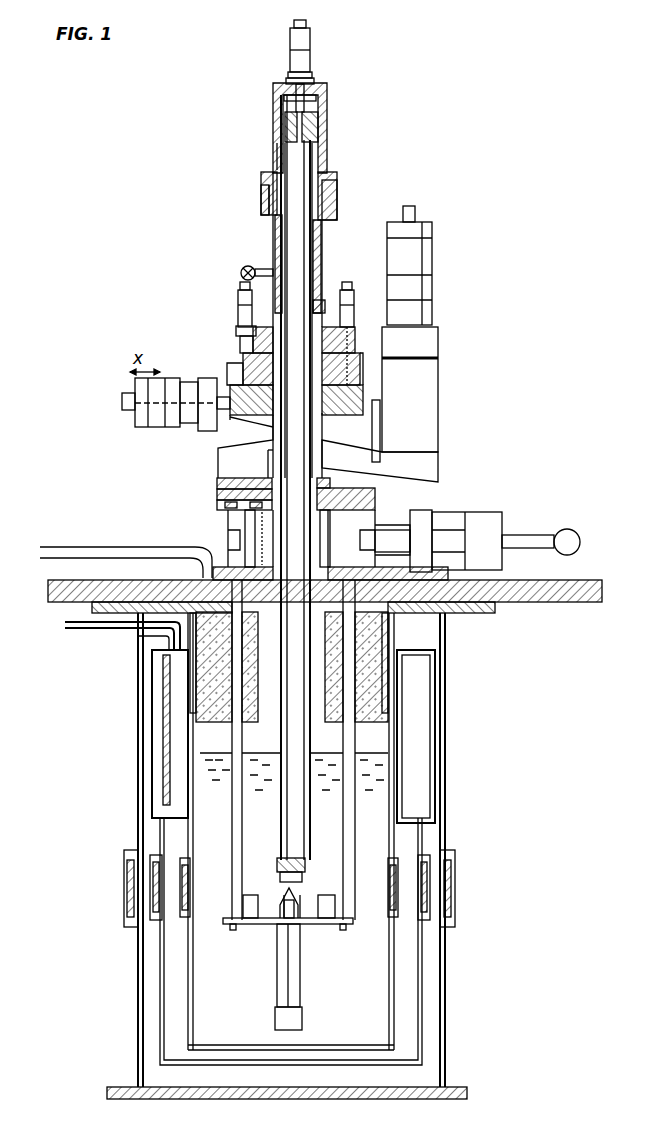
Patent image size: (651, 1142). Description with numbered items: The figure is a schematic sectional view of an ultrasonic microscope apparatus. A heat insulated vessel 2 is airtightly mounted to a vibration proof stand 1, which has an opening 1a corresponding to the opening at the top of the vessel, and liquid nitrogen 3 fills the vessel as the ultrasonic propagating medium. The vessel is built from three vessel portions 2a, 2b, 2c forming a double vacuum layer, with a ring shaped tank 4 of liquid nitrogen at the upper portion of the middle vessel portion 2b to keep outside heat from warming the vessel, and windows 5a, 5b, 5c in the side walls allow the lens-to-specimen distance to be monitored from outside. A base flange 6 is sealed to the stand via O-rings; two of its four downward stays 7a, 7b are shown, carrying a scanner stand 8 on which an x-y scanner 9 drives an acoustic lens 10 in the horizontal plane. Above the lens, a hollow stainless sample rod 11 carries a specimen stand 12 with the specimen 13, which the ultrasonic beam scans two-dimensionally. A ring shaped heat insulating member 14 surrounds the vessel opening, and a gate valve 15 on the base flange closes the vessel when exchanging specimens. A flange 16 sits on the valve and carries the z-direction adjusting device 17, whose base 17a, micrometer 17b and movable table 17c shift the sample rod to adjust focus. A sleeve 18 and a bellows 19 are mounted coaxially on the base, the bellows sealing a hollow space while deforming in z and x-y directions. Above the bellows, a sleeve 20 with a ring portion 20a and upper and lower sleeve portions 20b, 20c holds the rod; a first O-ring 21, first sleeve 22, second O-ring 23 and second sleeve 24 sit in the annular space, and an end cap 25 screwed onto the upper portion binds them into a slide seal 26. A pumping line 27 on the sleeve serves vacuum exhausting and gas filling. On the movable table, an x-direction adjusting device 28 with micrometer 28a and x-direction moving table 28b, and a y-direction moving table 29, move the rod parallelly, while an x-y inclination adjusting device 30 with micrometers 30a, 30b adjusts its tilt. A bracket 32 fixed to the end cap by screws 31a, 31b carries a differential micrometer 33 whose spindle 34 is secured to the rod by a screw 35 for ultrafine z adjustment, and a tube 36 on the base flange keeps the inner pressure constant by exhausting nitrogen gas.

The vibration proof stand 1 is at (535, 613).
The opening 1a is at (388, 605).
The heat insulated vessel 2 is at (460, 784).
The vessel portion 2a is at (388, 1018).
The middle vessel portion 2b is at (425, 1045).
The vessel portion 2c is at (445, 1080).
The liquid nitrogen 3 is at (395, 838).
The ring shaped tank 4 is at (153, 694).
The window 5a is at (398, 928).
The window 5b is at (430, 928).
The window 5c is at (455, 908).
The base flange 6 is at (210, 555).
The stay 7a is at (440, 629).
The stay 7b is at (436, 625).
The scanner stand 8 is at (300, 924).
The x-y scanner 9 is at (284, 924).
The acoustic lens 10 is at (290, 920).
The sample rod 11 is at (235, 855).
The specimen stand 12 is at (345, 840).
The specimen 13 is at (287, 848).
The ring shaped heat insulating member 14 is at (210, 670).
The gate valve 15 is at (478, 500).
The flange 16 is at (248, 496).
The z-direction adjusting device 17 is at (442, 392).
The base 17a is at (240, 478).
The micrometer 17b is at (432, 250).
The movable table 17c is at (370, 418).
The sleeve 18 is at (265, 432).
The bellows 19 is at (230, 424).
The sleeve 20 is at (241, 273).
The ring portion 20a is at (321, 252).
The upper sleeve portion 20b is at (322, 228).
The lower sleeve portion 20c is at (322, 285).
The first O-ring 21 is at (283, 256).
The first sleeve 22 is at (273, 234).
The second O-ring 23 is at (273, 218).
The second sleeve 24 is at (268, 202).
The end cap 25 is at (261, 186).
The slide seal 26 is at (340, 189).
The pumping line 27 is at (273, 268).
The x-direction adjusting device 28 is at (120, 364).
The micrometer 28a is at (122, 398).
The x-direction moving table 28b is at (230, 390).
The y-direction moving table 29 is at (240, 360).
The x-y inclination adjusting device 30 is at (232, 330).
The micrometer 30a is at (237, 302).
The micrometer 30b is at (354, 300).
The screw 31a is at (337, 175).
The screw 31b is at (266, 172).
The bracket 32 is at (327, 133).
The differential micrometer 33 is at (312, 60).
The spindle 34 is at (316, 97).
The screw 35 is at (318, 122).
The tube 36 is at (58, 548).